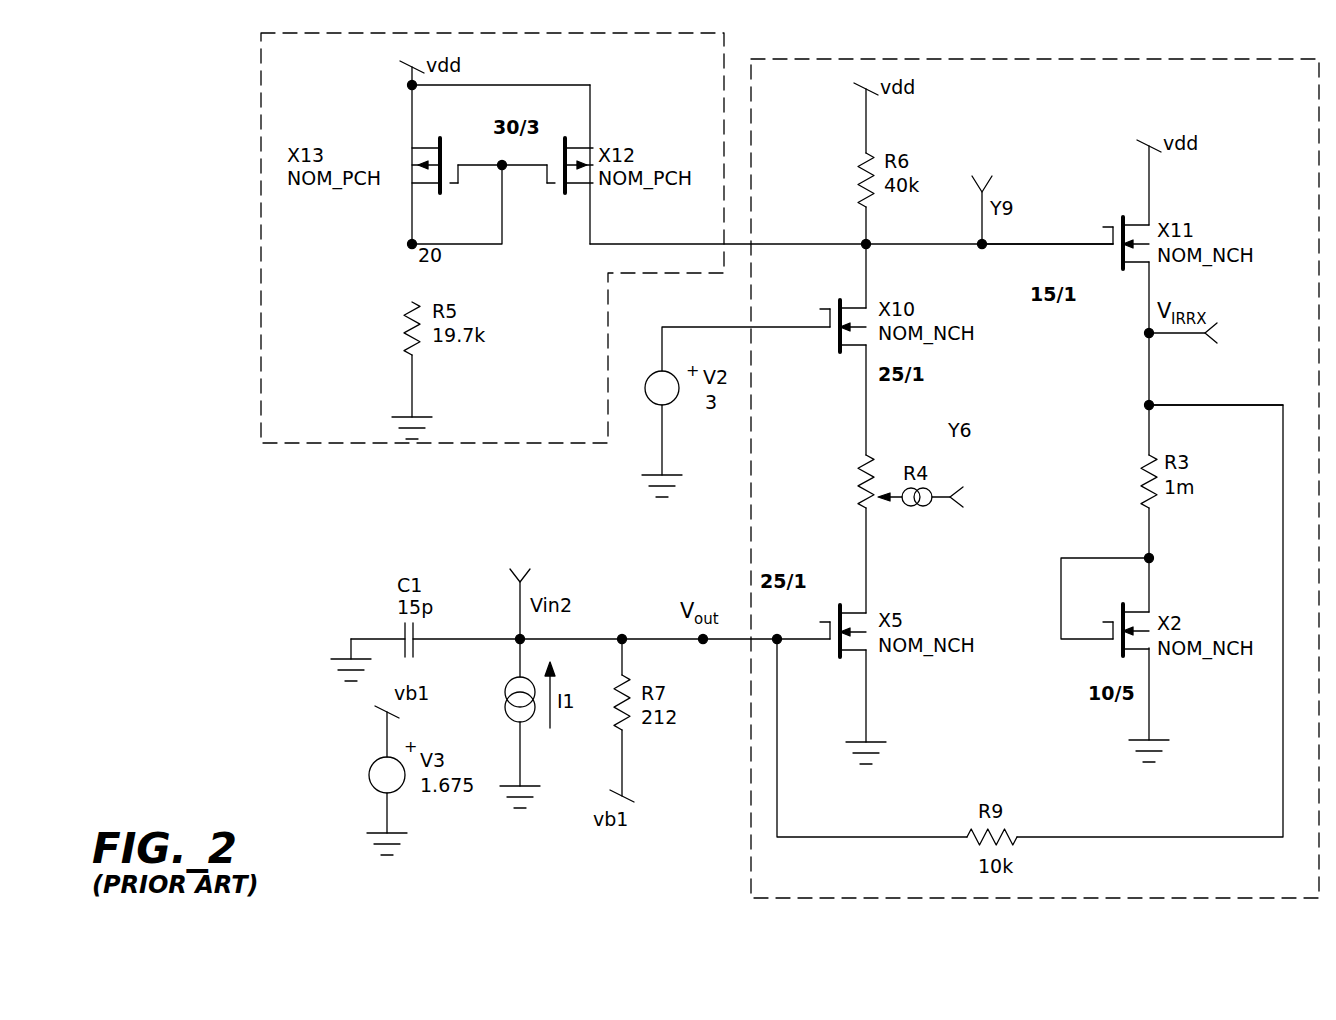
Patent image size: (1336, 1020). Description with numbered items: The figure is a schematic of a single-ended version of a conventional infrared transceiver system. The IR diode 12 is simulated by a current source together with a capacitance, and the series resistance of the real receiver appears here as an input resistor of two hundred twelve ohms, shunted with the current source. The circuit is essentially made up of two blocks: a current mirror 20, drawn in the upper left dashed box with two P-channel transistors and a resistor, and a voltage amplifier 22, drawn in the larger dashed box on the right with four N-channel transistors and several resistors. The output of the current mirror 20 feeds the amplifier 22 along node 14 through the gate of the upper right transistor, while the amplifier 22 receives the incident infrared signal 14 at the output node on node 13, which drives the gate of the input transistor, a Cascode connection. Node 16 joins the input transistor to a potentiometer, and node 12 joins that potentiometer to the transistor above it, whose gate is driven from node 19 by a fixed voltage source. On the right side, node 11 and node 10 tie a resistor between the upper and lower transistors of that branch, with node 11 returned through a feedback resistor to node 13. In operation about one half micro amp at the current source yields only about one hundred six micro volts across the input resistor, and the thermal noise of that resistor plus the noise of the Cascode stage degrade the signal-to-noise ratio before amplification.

The current mirror 20 is at (497, 430).
The voltage amplifier 22 is at (752, 860).
The node 10 is at (1121, 593).
The node 11 is at (1214, 414).
The IR diode 12 is at (880, 400).
The node 13 is at (835, 736).
The incident infrared signal 14 is at (1047, 256).
The node 16 is at (881, 560).
The node 19 is at (746, 349).